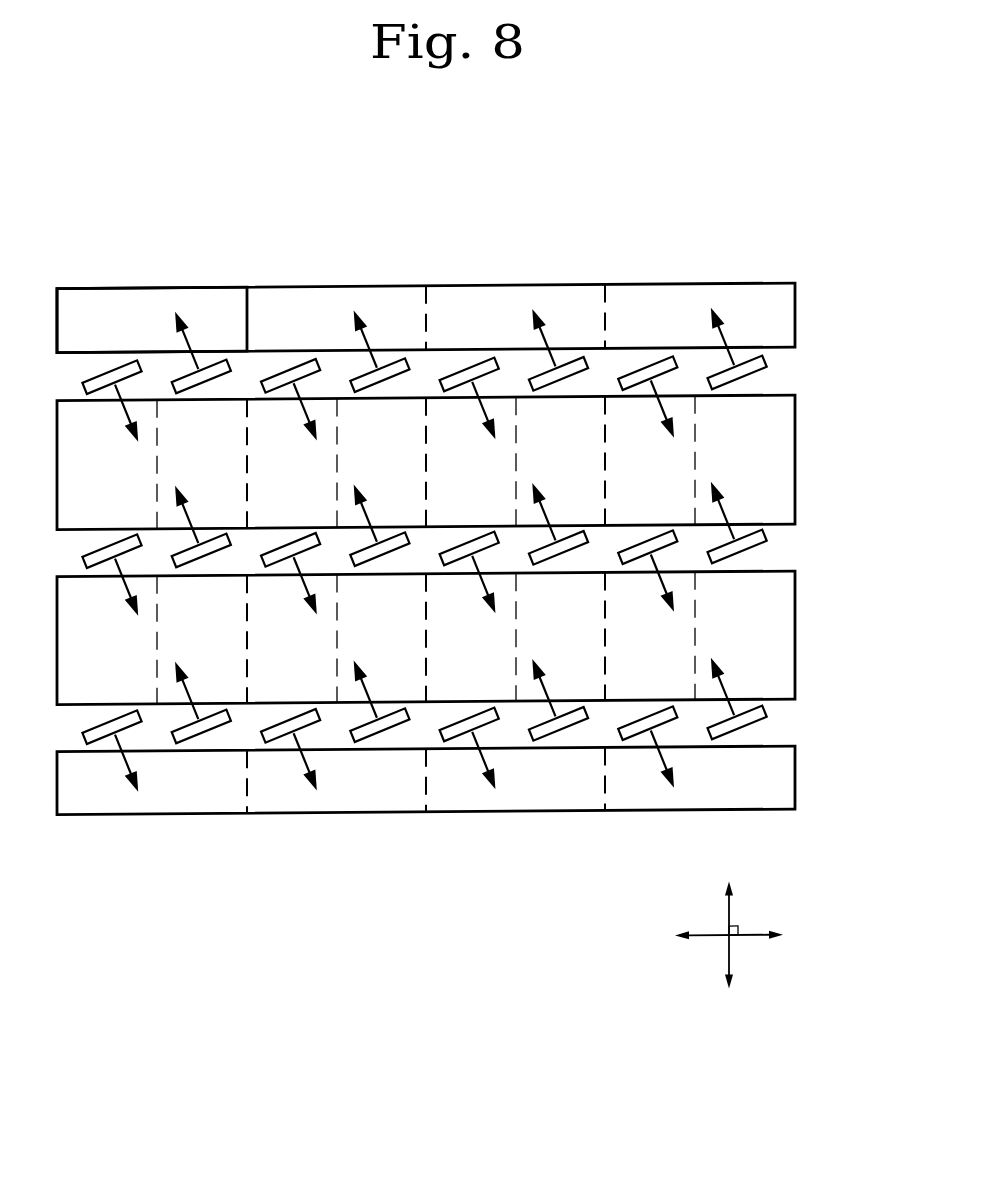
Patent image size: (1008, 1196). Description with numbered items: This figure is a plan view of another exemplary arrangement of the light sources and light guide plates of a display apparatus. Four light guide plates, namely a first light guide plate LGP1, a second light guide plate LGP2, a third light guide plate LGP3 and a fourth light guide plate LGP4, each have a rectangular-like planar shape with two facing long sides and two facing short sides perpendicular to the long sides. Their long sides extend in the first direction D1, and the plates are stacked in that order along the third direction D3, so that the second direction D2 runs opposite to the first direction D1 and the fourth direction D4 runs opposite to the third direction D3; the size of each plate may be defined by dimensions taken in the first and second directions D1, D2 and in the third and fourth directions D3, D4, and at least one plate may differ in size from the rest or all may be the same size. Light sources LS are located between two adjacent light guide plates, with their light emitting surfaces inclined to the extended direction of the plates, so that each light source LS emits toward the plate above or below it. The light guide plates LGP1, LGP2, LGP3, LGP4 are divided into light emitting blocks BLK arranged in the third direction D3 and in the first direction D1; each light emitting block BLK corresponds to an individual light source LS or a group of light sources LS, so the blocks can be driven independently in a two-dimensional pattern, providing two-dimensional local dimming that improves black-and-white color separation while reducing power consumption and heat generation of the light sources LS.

The light emitting block BLK is at (502, 300).
The first light guide plate LGP1 is at (782, 323).
The second light guide plate LGP2 is at (783, 466).
The third light guide plate LGP3 is at (783, 636).
The fourth light guide plate LGP4 is at (783, 784).
The light source LS is at (767, 364).
The first direction D1 is at (656, 935).
The second direction D2 is at (798, 935).
The third direction D3 is at (728, 867).
The fourth direction D4 is at (728, 1005).